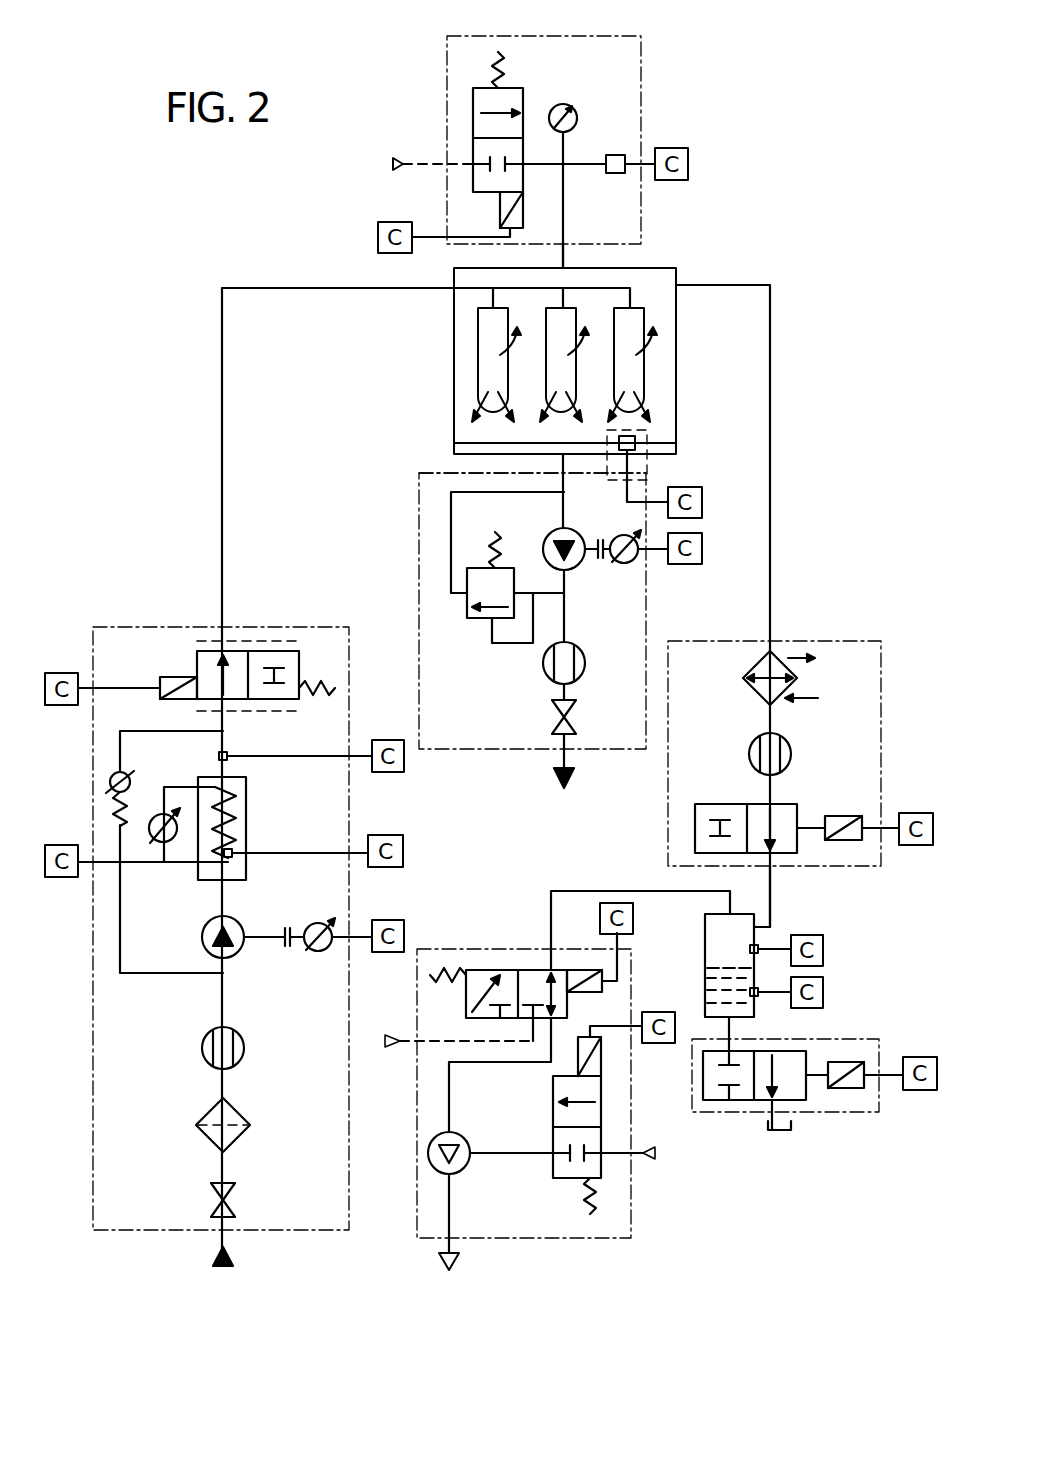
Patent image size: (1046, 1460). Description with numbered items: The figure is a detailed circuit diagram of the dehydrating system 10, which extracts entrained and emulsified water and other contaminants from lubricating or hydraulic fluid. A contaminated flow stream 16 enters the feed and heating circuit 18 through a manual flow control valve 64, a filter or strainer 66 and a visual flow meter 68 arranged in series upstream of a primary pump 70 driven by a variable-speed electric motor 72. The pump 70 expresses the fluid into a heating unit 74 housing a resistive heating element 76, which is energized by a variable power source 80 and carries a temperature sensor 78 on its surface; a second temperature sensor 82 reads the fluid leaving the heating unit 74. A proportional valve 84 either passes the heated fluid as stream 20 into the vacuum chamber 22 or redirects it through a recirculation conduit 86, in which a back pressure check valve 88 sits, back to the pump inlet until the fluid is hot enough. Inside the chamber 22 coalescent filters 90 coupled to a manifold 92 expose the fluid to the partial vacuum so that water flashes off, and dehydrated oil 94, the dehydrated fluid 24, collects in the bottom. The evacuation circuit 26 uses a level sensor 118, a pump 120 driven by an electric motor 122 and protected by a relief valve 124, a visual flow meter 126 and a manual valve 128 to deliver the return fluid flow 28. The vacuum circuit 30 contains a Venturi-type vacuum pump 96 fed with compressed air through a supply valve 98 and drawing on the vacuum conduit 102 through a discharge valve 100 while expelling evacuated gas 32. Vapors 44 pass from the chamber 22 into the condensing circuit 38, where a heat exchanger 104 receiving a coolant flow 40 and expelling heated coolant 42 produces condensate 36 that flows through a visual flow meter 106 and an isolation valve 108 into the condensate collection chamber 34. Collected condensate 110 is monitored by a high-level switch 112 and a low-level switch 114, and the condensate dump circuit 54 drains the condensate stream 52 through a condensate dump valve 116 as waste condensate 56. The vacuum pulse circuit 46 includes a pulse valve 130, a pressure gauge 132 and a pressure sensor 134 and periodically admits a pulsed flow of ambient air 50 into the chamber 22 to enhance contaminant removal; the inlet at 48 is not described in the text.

The dehydrating system 10 is at (757, 1203).
The flow stream 16 is at (213, 1258).
The fluid feed and heating circuit 18 is at (93, 1085).
The stream of heated fluid 20 is at (221, 380).
The vacuum chamber 22 is at (678, 275).
The dehydrated fluid 24 is at (522, 466).
The fluid evacuation circuit 26 is at (478, 750).
The return fluid flow 28 is at (556, 778).
The vacuum circuit 30 is at (417, 1238).
The evacuated gas 32 is at (458, 1258).
The condensate collection chamber 34 is at (756, 930).
The condensate 36 is at (772, 895).
The condensing circuit 38 is at (827, 640).
The flow of coolant 40 is at (815, 660).
The heated coolant 42 is at (822, 698).
The vapors 44 is at (772, 370).
The vacuum pulse circuit 46 is at (646, 50).
The gas inlet 48 is at (420, 164).
The pulsed flow of ambient air 50 is at (566, 262).
The condensate stream 52 is at (712, 1025).
The condensate dump circuit 54 is at (860, 1112).
The waste condensate 56 is at (792, 1128).
The manual flow control valve 64 is at (236, 1195).
The filter or strainer 66 is at (200, 1135).
The visual flow meter 68 is at (202, 1048).
The primary pump 70 is at (240, 952).
The electric motor 72 is at (318, 922).
The heating unit 74 is at (200, 880).
The resistive heating element 76 is at (236, 812).
The temperature sensor 78 is at (236, 853).
The variable power source 80 is at (165, 812).
The temperature sensor 82 is at (232, 756).
The proportional valve 84 is at (198, 652).
The recirculation conduit 86 is at (120, 745).
The back pressure check valve 88 is at (112, 775).
The coalescent filters 90 is at (478, 355).
The manifold 92 is at (493, 292).
The dehydrated oil 94 is at (472, 443).
The vacuum pump 96 is at (428, 1153).
The supply valve 98 is at (553, 1085).
The discharge valve 100 is at (505, 970).
The vacuum conduit 102 is at (580, 890).
The heat exchanger 104 is at (752, 700).
The visual flow meter 106 is at (752, 754).
The isolation valve 108 is at (792, 805).
The condensate 110 is at (720, 968).
The high-level switch 112 is at (760, 952).
The low-level switch 114 is at (760, 996).
The condensate dump valve 116 is at (740, 1100).
The level sensor 118 is at (650, 441).
The pump 120 is at (580, 566).
The electric motor 122 is at (640, 563).
The relief valve 124 is at (467, 578).
The visual flow meter 126 is at (545, 662).
The manual valve 128 is at (555, 710).
The pulse valve 130 is at (473, 100).
The pressure gauge 132 is at (570, 106).
The pressure sensor 134 is at (622, 154).